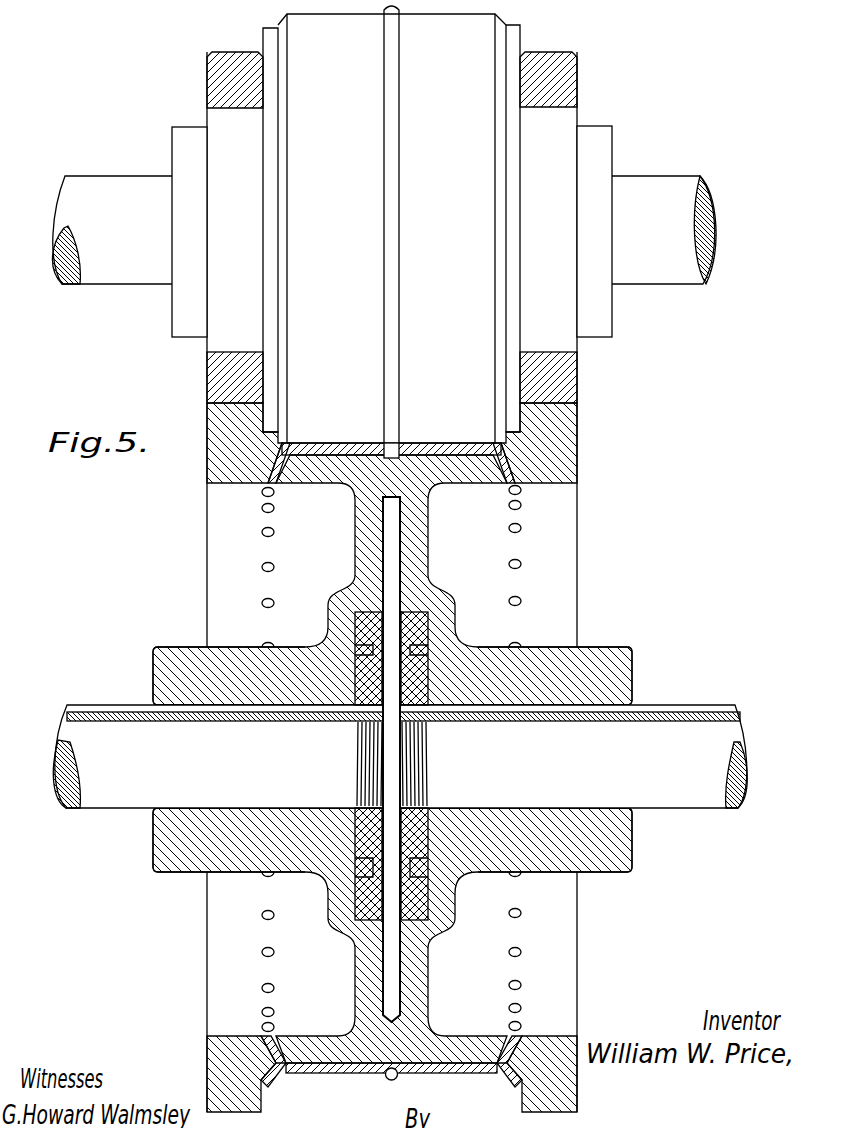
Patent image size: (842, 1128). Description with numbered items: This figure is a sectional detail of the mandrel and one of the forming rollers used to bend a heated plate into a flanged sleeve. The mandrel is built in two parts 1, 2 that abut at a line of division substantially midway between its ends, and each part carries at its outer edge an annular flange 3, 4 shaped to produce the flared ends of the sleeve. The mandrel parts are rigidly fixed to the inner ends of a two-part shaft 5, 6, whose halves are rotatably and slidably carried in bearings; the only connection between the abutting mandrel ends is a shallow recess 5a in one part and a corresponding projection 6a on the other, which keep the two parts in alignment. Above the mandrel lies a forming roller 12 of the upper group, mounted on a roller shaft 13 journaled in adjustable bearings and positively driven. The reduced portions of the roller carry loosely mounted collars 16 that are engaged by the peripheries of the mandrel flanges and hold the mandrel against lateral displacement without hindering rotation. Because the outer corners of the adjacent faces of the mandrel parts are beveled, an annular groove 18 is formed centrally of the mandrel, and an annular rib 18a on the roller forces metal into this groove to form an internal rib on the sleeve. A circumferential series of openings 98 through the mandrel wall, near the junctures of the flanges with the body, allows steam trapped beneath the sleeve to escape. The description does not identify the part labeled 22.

The mandrel part 1 is at (540, 483).
The mandrel part 2 is at (223, 540).
The annular flange 3 is at (560, 452).
The annular flange 4 is at (225, 437).
The shaft part 5 is at (688, 710).
The shallow recess 5a is at (391, 1024).
The shaft part 6 is at (122, 713).
The projection 6a is at (392, 1022).
The forming roller 12 is at (462, 177).
The roller shaft 13 is at (116, 185).
The collar 16 is at (220, 378).
The annular groove 18 is at (377, 443).
The annular rib 18a is at (393, 368).
The central column collar 22 is at (368, 535).
The openings 98 is at (270, 497).